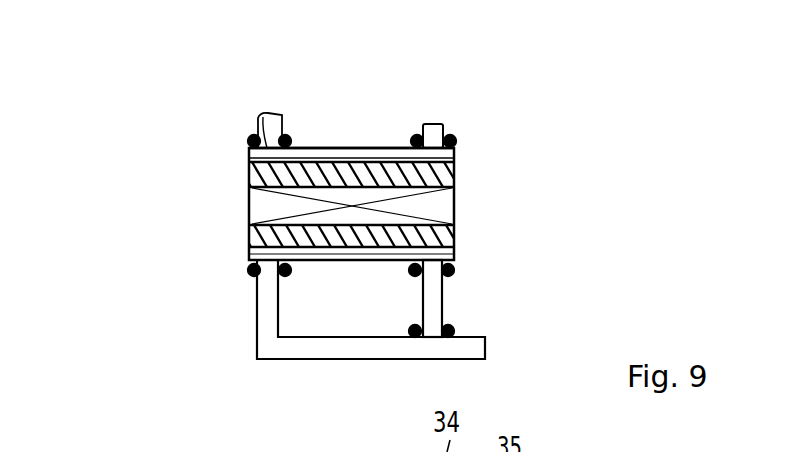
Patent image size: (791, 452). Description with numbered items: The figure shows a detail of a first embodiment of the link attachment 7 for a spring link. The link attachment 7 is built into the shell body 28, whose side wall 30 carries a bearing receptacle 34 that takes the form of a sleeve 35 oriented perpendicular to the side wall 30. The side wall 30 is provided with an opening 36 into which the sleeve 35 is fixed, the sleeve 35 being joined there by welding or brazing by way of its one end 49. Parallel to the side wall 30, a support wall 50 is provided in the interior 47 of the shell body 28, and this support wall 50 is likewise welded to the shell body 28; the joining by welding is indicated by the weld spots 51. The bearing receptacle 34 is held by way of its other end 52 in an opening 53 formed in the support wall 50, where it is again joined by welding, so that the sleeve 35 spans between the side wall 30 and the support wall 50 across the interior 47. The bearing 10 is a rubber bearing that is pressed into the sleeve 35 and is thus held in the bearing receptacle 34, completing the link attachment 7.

The link attachment 7 is at (112, 155).
The bearing 10 is at (455, 180).
The shell body 28 is at (356, 367).
The side wall 30 is at (267, 318).
The bearing receptacle 34 is at (310, 146).
The sleeve 35 is at (343, 158).
The opening 36 is at (258, 113).
The interior 47 is at (374, 304).
The end 49 is at (248, 253).
The support wall 50 is at (428, 128).
The weld spots 51 is at (453, 137).
The other end 52 is at (460, 262).
The opening 53 is at (432, 268).